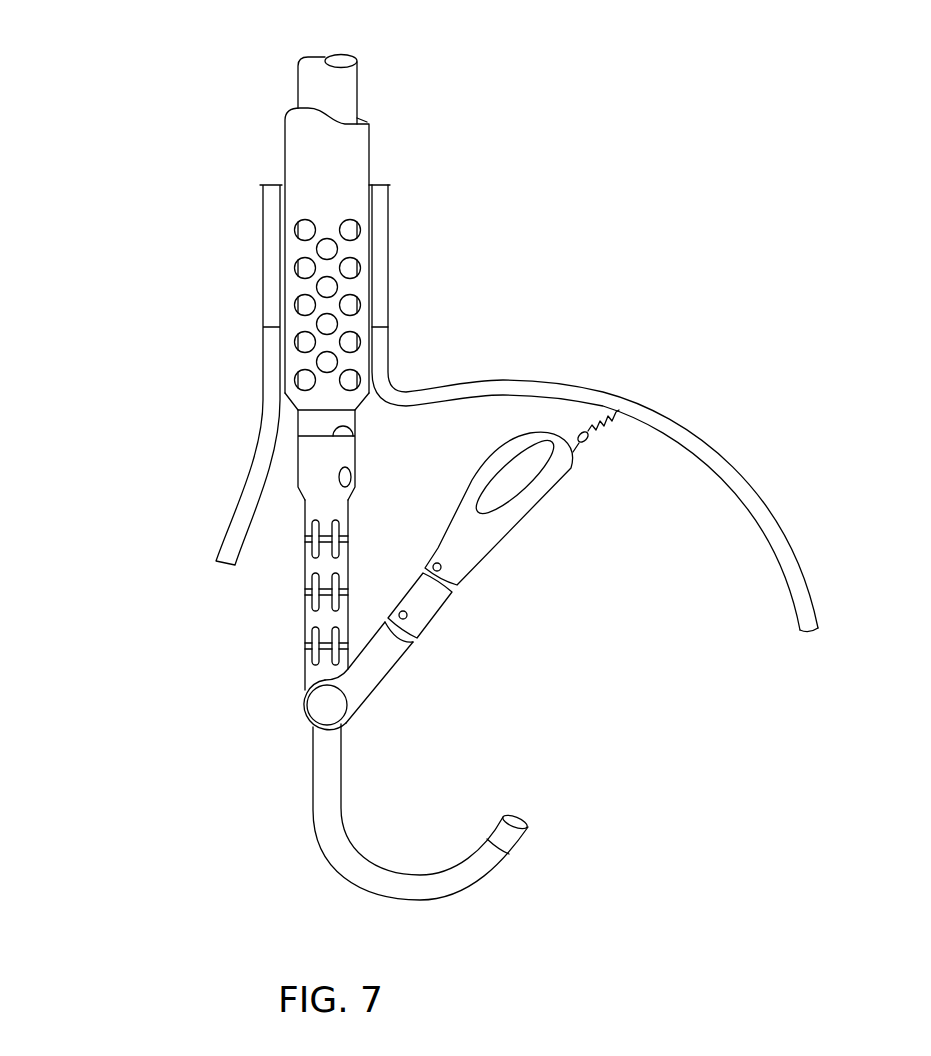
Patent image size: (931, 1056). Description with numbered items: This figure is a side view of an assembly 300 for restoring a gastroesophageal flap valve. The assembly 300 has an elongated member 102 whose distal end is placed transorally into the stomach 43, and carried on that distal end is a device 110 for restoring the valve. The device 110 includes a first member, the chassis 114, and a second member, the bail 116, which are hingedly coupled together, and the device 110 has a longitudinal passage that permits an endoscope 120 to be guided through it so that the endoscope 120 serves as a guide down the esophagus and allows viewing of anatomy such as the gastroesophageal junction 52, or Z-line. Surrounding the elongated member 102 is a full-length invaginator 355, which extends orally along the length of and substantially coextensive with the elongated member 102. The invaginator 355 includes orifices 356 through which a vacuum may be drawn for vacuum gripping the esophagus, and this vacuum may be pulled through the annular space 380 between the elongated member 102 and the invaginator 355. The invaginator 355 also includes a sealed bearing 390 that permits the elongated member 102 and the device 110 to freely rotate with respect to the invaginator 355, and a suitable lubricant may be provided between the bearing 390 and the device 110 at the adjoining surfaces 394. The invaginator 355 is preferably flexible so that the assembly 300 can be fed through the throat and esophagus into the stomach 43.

The elongated member 102 is at (345, 93).
The invaginator 355 is at (298, 142).
The annular space 380 is at (365, 118).
The orifices 356 is at (300, 230).
The gastroesophageal junction 52 is at (272, 322).
The stomach 43 is at (557, 387).
The sealed bearing 390 is at (302, 420).
The adjoining surfaces 394 is at (345, 432).
The chassis 114 is at (278, 607).
The bail 116 is at (466, 594).
The device 110 is at (234, 682).
The endoscope 120 is at (322, 812).
The assembly 300 is at (150, 488).